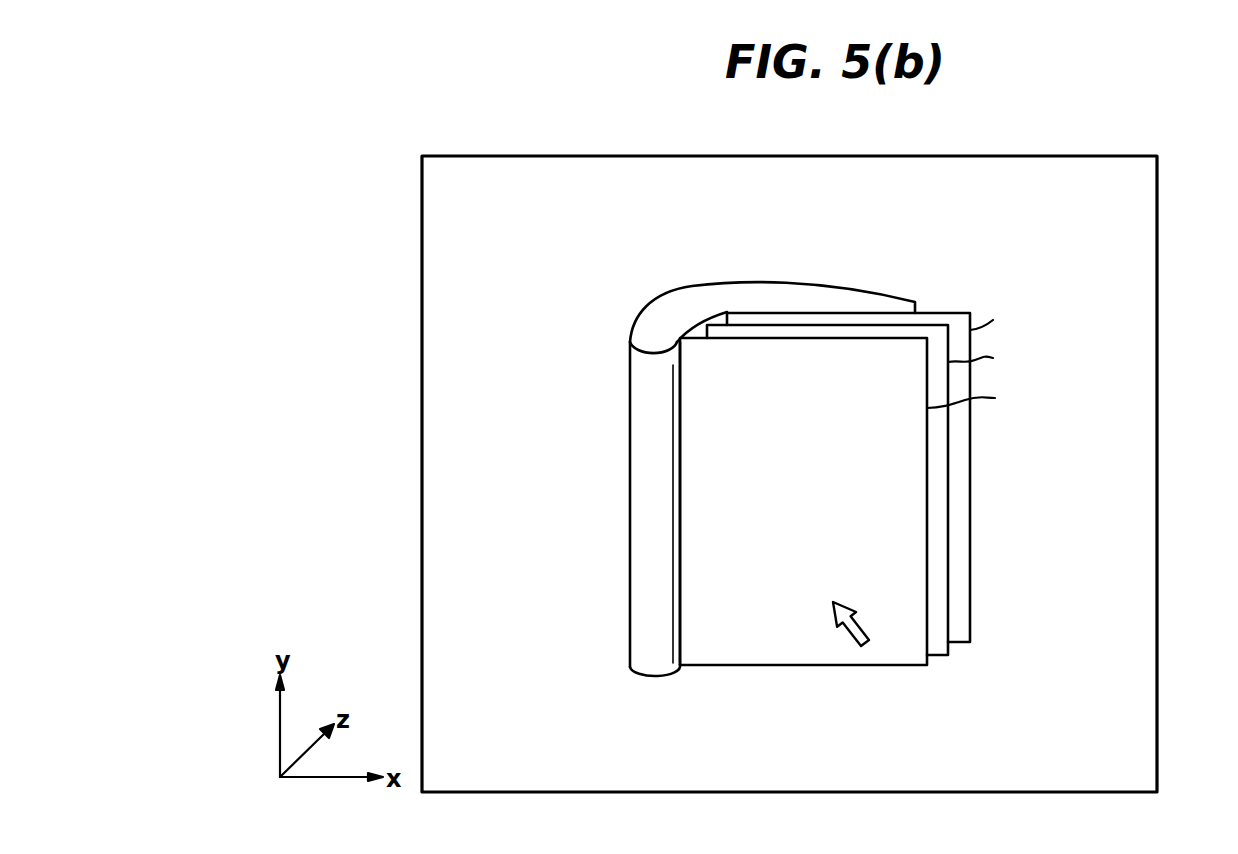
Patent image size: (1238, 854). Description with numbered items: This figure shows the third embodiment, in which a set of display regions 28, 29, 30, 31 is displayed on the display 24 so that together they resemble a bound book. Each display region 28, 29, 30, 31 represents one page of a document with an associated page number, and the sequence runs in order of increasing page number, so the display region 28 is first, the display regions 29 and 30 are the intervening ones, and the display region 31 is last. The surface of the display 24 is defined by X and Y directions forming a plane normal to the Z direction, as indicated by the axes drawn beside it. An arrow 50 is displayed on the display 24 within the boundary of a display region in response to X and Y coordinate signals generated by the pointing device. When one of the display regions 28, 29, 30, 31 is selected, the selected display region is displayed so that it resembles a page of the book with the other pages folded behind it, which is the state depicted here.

The display 24 is at (1157, 195).
The display region 28 is at (879, 290).
The display region 29 is at (875, 666).
The display region 30 is at (940, 655).
The display region 31 is at (970, 642).
The arrow 50 is at (857, 619).